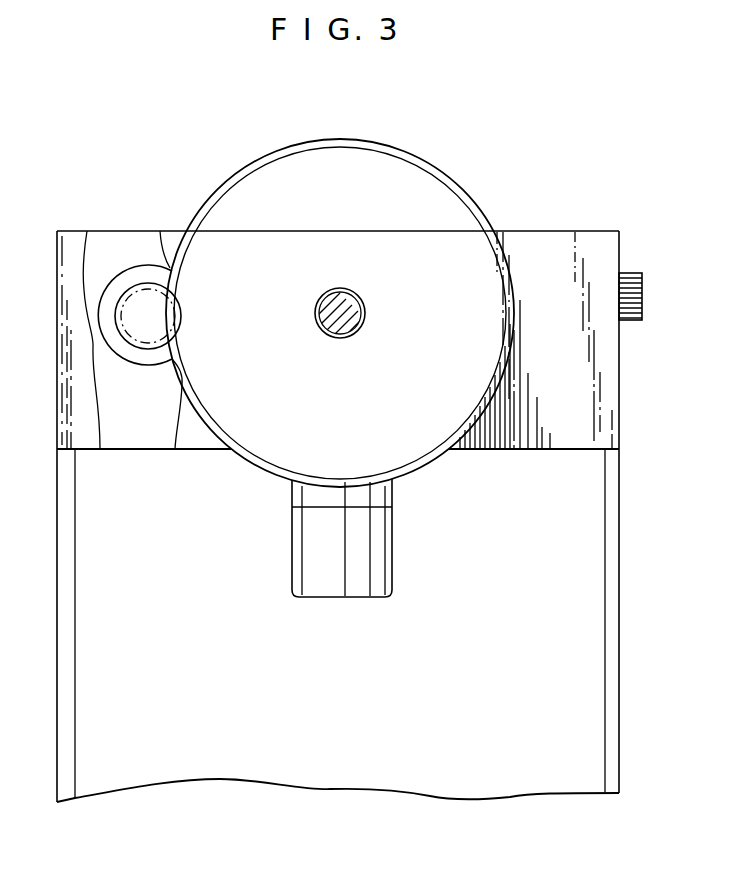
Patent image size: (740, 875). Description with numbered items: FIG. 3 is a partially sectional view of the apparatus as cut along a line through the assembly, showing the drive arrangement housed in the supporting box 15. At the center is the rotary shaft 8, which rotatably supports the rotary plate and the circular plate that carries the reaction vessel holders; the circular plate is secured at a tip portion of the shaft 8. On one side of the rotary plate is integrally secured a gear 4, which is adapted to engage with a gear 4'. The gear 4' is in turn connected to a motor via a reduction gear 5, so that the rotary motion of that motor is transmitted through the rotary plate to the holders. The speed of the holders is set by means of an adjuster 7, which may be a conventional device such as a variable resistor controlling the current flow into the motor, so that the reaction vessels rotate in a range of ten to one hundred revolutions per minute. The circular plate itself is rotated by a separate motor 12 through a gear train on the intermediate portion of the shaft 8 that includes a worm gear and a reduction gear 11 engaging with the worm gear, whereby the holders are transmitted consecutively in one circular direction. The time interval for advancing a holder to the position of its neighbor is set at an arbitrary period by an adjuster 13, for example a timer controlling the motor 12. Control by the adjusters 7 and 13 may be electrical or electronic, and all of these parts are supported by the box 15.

The gear 4 is at (340, 302).
The gear 4' is at (104, 316).
The reduction gear 5 is at (147, 268).
The adjuster 7 is at (631, 313).
The rotary shaft 8 is at (349, 300).
The reduction gear 11 is at (384, 497).
The motor 12 is at (332, 587).
The adjuster 13 is at (631, 275).
The box 15 is at (551, 240).